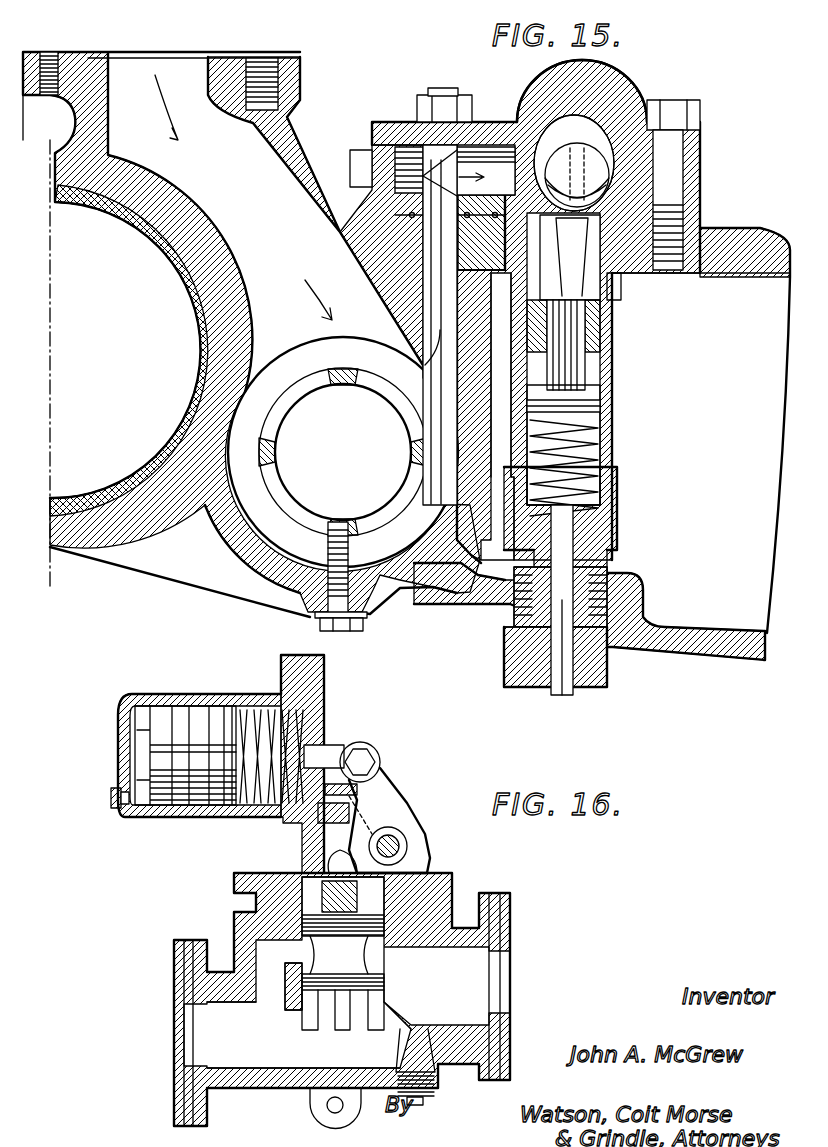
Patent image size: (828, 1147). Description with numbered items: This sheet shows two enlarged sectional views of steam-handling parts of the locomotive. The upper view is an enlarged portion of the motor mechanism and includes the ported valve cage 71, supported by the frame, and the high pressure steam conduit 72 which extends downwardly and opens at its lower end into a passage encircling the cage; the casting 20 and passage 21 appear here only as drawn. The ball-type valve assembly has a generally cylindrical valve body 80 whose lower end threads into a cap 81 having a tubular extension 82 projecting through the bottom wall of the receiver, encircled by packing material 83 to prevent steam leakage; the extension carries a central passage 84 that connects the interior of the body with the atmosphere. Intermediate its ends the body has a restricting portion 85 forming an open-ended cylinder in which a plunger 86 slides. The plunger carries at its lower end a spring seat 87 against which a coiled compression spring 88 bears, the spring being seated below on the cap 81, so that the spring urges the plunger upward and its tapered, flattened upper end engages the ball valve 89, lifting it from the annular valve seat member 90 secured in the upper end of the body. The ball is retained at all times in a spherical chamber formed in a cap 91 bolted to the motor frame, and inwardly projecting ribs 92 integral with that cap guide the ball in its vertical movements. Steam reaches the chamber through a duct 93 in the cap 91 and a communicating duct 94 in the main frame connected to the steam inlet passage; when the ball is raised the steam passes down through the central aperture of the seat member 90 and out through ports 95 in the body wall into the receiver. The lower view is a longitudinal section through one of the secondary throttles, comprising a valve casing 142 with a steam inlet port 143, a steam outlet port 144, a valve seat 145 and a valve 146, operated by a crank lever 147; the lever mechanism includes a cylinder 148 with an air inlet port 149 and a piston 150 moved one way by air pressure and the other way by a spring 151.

In FIG. 15, the pipe casing 20 is at (756, 262).
In FIG. 15, the port passage 21 is at (180, 228).
In FIG. 15, the valve cage 71 is at (262, 442).
In FIG. 15, the steam conduit 72 is at (247, 153).
In FIG. 15, the valve body 80 is at (604, 372).
In FIG. 15, the cap 81 is at (600, 538).
In FIG. 15, the tubular extension 82 is at (506, 648).
In FIG. 15, the packing material 83 is at (520, 615).
In FIG. 15, the central passage 84 is at (562, 690).
In FIG. 15, the restricting portion 85 is at (600, 322).
In FIG. 15, the plunger 86 is at (580, 350).
In FIG. 15, the spring seat 87 is at (600, 406).
In FIG. 15, the coiled compression spring 88 is at (585, 460).
In FIG. 15, the ball valve 89 is at (590, 160).
In FIG. 15, the annular valve seat member 90 is at (650, 215).
In FIG. 15, the cap 91 is at (548, 112).
In FIG. 15, the ribs 92 is at (517, 120).
In FIG. 15, the duct 93 is at (452, 70).
In FIG. 15, the communicating duct 94 is at (432, 290).
In FIG. 15, the ports 95 is at (612, 290).
In FIG. 16, the valve casing 142 is at (236, 914).
In FIG. 16, the steam inlet port 143 is at (497, 970).
In FIG. 16, the steam outlet port 144 is at (193, 1015).
In FIG. 16, the valve seat 145 is at (396, 988).
In FIG. 16, the valve 146 is at (330, 955).
In FIG. 16, the valve operating crank lever 147 is at (384, 772).
In FIG. 16, the cylinder 148 is at (186, 811).
In FIG. 16, the air inlet port 149 is at (116, 800).
In FIG. 16, the piston 150 is at (198, 720).
In FIG. 16, the spring 151 is at (296, 722).